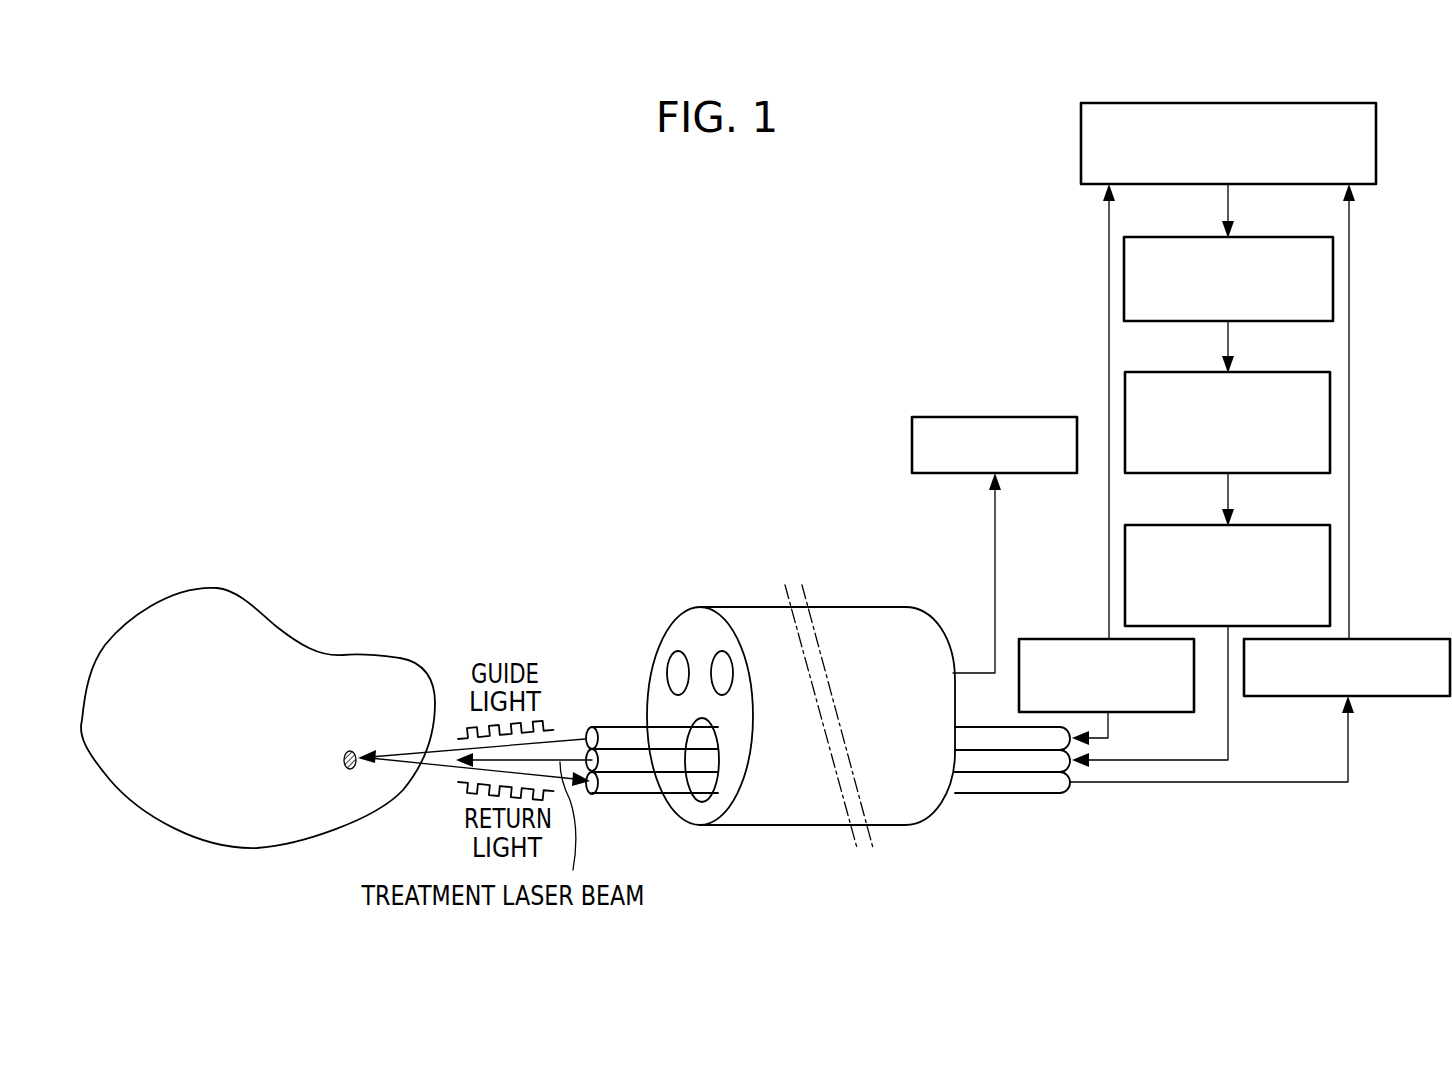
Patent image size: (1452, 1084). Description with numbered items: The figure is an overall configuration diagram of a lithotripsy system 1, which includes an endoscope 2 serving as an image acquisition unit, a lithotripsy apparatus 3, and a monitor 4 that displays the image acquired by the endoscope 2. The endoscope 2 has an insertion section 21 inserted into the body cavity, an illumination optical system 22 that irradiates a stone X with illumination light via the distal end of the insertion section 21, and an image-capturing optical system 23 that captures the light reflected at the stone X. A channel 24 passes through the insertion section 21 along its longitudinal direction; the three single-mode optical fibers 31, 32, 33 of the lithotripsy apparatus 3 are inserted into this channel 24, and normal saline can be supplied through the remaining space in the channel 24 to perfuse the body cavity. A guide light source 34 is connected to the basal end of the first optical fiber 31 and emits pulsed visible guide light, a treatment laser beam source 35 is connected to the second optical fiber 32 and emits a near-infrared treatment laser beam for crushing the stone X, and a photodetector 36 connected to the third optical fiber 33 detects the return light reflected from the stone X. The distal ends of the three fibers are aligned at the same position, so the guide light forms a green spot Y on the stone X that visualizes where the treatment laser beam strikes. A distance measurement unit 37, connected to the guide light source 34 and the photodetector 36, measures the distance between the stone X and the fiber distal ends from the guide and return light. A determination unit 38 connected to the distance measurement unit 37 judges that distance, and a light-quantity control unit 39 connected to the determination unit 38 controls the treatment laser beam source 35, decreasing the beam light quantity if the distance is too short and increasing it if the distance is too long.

The lithotripsy system 1 is at (560, 328).
The endoscope 2 is at (770, 699).
The insertion section 21 is at (760, 620).
The illumination optical system 22 is at (717, 662).
The image-capturing optical system 23 is at (676, 668).
The channel 24 is at (706, 792).
The lithotripsy apparatus 3 is at (1027, 288).
The monitor 4 is at (983, 417).
The first optical fiber 31 is at (1012, 736).
The second optical fiber 32 is at (983, 760).
The third optical fiber 33 is at (1042, 784).
The guide light source 34 is at (1058, 639).
The treatment laser beam source 35 is at (1255, 525).
The photodetector 36 is at (1400, 639).
The distance measurement unit 37 is at (1378, 144).
The determination unit 38 is at (1250, 237).
The light-quantity control unit 39 is at (1255, 372).
The stone X is at (217, 588).
The green spot Y is at (350, 750).